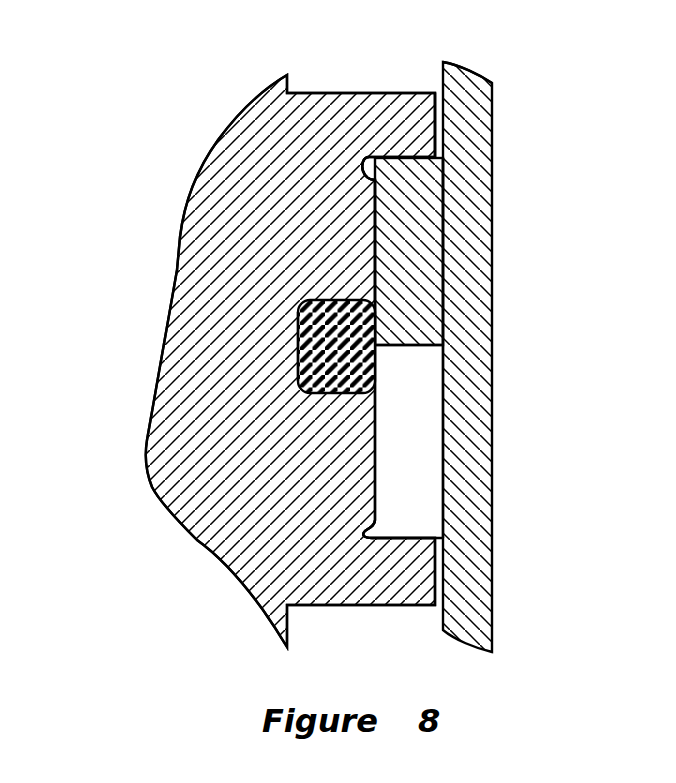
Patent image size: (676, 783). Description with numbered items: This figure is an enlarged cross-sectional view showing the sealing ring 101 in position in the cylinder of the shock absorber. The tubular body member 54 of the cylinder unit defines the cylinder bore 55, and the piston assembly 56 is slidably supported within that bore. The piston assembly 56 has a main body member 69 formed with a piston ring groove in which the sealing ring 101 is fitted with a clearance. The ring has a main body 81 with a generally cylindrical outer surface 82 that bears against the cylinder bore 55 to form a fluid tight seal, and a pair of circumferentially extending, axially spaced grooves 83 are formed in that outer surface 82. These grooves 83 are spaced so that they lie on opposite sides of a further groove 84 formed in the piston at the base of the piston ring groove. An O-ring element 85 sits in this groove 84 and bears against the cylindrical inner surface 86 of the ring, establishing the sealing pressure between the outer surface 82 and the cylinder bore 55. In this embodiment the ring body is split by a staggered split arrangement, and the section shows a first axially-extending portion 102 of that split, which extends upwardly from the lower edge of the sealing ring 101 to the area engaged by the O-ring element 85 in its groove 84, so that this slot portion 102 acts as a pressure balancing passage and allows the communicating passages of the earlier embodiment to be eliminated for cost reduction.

The tubular body member 54 is at (486, 267).
The cylinder bore 55 is at (443, 93).
The piston assembly 56 is at (195, 167).
The main body member 69 is at (220, 253).
The main body 81 is at (415, 193).
The outer surface 82 is at (446, 170).
The grooves 83 is at (444, 223).
The groove 84 is at (327, 340).
The O-ring element 85 is at (302, 390).
The cylindrical inner surface 86 is at (372, 262).
The sealing ring 101 is at (428, 481).
The first axially-extending portion 102 is at (423, 375).